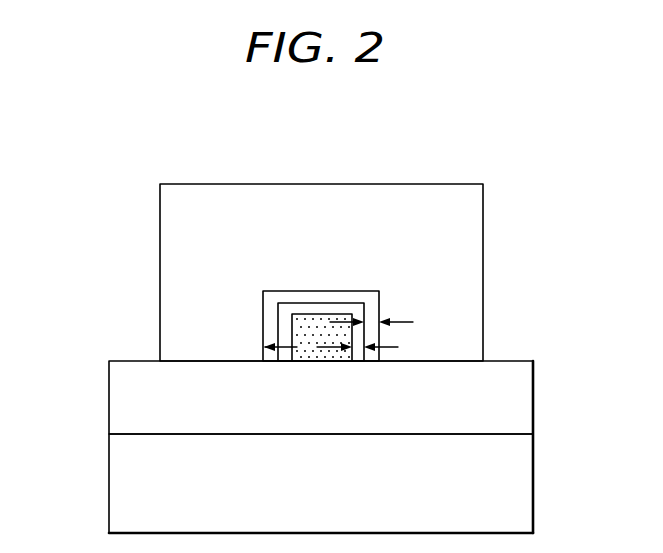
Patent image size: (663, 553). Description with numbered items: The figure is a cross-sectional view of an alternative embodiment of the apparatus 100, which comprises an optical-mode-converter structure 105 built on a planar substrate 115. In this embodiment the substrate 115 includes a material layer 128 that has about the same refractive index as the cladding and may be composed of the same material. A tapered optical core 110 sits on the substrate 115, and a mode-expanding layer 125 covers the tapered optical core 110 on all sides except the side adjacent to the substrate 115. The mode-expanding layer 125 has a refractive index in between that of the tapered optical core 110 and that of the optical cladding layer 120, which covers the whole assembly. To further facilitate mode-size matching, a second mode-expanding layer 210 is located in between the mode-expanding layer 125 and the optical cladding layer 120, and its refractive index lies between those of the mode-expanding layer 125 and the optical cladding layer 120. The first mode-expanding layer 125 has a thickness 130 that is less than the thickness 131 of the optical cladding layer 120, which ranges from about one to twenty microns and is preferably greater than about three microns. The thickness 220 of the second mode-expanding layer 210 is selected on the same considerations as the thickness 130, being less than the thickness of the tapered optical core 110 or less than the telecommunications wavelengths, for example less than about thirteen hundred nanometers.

The apparatus 100 is at (507, 138).
The optical-mode-converter structure 105 is at (119, 188).
The tapered optical core 110 is at (300, 330).
The planar substrate 115 is at (120, 482).
The optical cladding layer 120 is at (323, 184).
The mode-expanding layer 125 is at (291, 306).
The material layer 128 is at (120, 398).
The thickness of the mode-expanding layer 130 is at (396, 348).
The thickness of the optical cladding layer 131 is at (152, 347).
The second mode-expanding layer 210 is at (353, 297).
The thickness of the second mode-expanding layer 220 is at (402, 321).